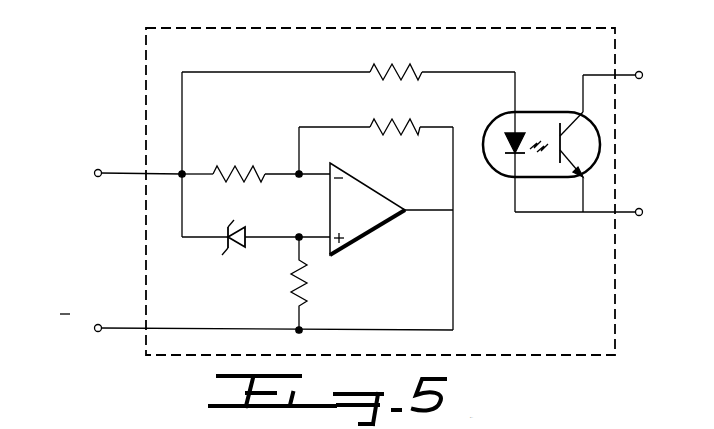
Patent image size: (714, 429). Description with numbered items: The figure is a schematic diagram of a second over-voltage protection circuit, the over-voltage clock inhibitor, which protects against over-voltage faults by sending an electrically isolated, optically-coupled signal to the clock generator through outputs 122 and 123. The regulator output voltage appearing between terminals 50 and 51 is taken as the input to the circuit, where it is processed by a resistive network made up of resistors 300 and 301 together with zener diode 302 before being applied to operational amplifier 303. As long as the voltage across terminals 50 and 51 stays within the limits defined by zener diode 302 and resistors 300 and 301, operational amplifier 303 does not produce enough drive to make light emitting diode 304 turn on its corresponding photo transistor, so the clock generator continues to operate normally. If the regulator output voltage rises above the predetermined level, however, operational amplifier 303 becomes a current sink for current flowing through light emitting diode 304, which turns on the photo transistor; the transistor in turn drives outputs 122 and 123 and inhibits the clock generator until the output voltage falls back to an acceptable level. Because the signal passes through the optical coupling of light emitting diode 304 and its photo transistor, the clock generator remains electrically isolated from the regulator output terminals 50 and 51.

The output voltage terminal 50 is at (101, 171).
The output voltage terminal 51 is at (101, 326).
The resistor 300 is at (259, 152).
The resistor 301 is at (402, 108).
The zener diode 302 is at (241, 250).
The operational amplifier 303 is at (373, 229).
The light emitting diode 304 is at (541, 110).
The output 122 is at (642, 73).
The output 123 is at (642, 210).